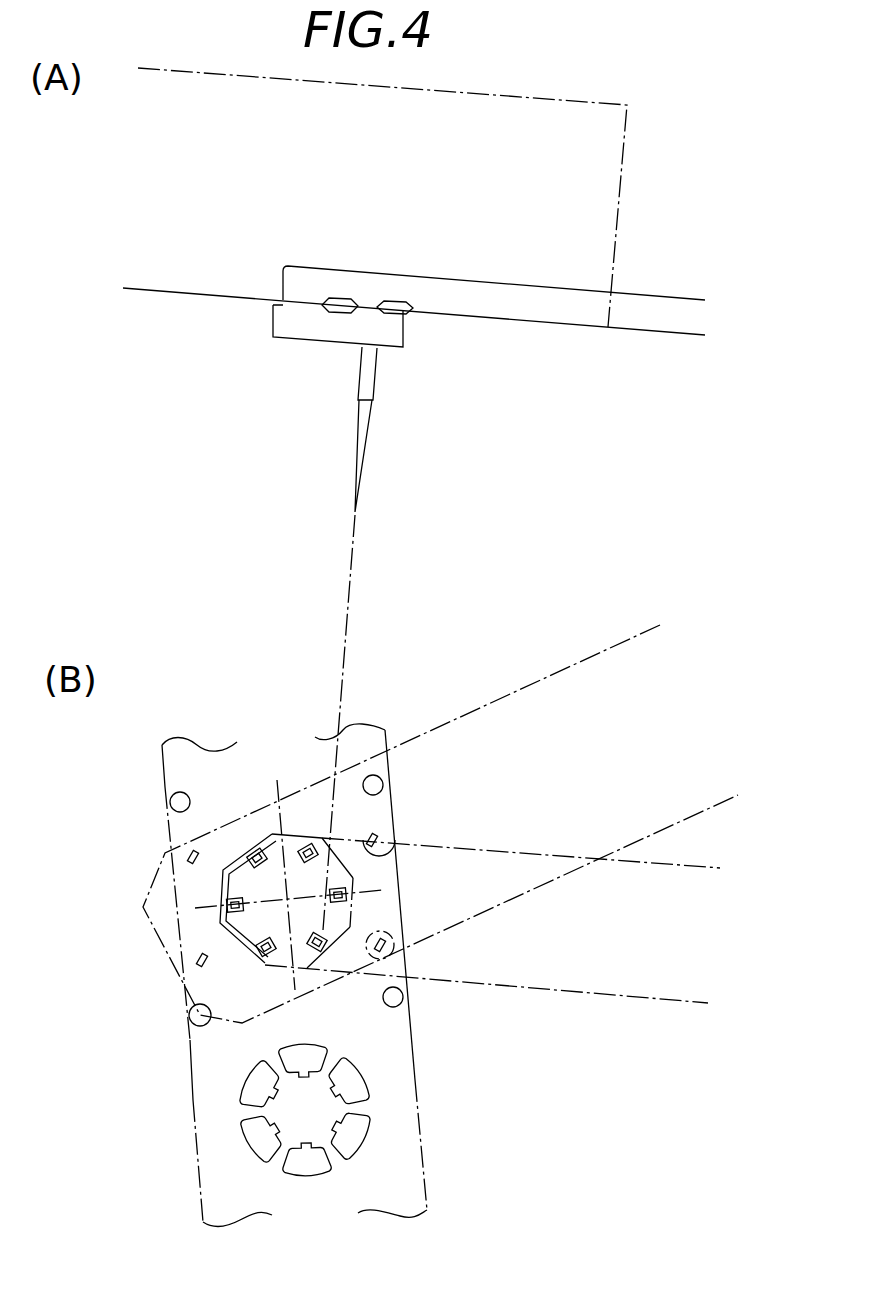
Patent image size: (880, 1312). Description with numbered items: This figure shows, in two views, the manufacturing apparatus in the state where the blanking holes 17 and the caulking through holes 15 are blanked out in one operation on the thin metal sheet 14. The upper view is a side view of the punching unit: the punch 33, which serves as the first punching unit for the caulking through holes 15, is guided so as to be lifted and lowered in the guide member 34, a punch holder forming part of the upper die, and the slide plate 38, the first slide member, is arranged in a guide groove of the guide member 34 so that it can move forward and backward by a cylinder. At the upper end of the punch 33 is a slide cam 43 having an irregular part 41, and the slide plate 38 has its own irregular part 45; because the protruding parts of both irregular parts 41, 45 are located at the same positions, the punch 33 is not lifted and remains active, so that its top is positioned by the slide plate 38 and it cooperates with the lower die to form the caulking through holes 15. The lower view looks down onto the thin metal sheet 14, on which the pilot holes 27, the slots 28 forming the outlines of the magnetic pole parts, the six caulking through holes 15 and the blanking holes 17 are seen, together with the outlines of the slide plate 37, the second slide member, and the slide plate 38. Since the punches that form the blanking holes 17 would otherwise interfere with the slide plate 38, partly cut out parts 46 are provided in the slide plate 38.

The thin metal sheet 14 is at (190, 1096).
The caulking through holes 15 is at (253, 850).
The blanking holes 17 is at (197, 962).
The pilot holes 27 is at (381, 777).
The slots 28 is at (353, 1080).
The punch 33 is at (365, 452).
The guide member 34 is at (618, 212).
The slide plate 37 is at (468, 712).
The slide plate 38 is at (557, 308).
The irregular part 41 is at (340, 300).
The slide cam 43 is at (302, 328).
The irregular part 45 is at (401, 308).
The partly cut out parts 46 is at (395, 838).